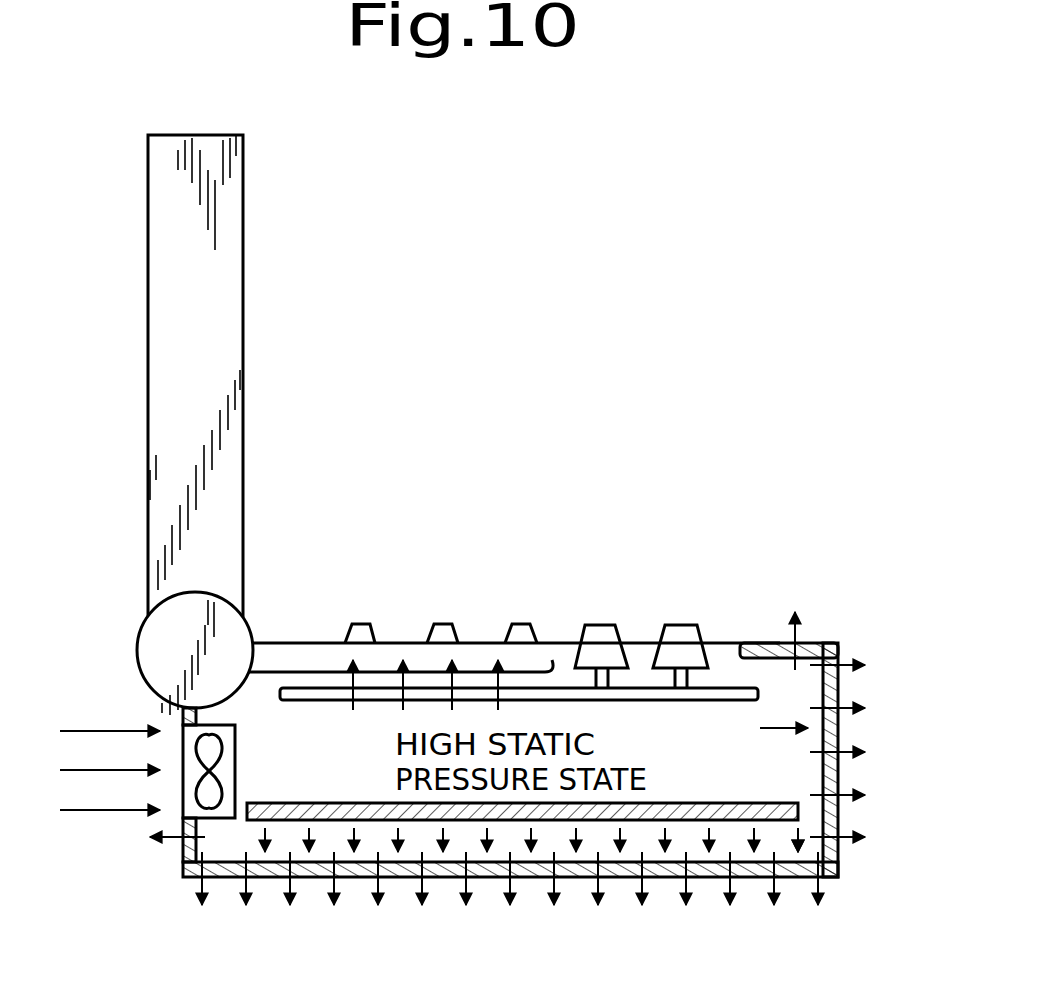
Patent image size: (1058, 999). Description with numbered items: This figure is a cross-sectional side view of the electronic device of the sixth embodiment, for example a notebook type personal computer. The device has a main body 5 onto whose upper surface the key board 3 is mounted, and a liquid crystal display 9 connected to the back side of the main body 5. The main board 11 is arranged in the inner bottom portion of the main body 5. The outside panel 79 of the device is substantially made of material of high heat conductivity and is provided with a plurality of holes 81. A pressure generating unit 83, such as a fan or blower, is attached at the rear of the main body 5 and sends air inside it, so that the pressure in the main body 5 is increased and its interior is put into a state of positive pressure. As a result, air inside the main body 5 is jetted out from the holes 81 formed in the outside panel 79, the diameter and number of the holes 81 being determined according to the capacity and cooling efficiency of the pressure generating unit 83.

The key board 3 is at (600, 636).
The main body 5 is at (708, 556).
The liquid crystal display 9 is at (220, 286).
The main board 11 is at (355, 802).
The outside panel 79 is at (148, 337).
The holes 81 is at (845, 797).
The pressure generating unit 83 is at (190, 805).